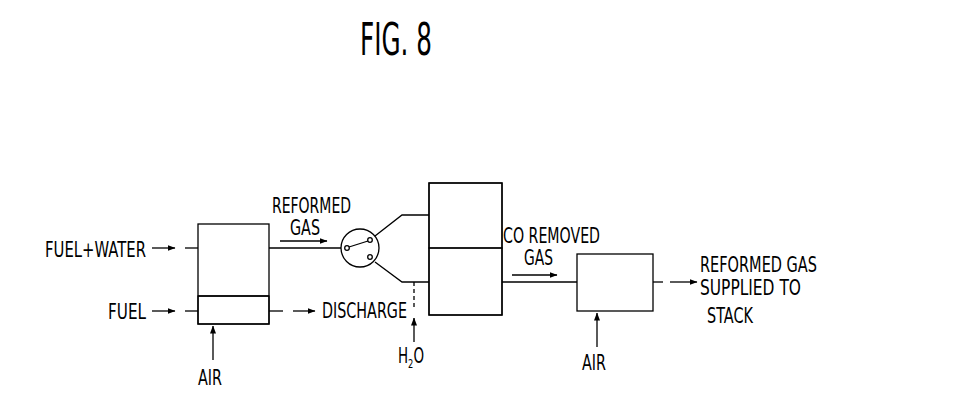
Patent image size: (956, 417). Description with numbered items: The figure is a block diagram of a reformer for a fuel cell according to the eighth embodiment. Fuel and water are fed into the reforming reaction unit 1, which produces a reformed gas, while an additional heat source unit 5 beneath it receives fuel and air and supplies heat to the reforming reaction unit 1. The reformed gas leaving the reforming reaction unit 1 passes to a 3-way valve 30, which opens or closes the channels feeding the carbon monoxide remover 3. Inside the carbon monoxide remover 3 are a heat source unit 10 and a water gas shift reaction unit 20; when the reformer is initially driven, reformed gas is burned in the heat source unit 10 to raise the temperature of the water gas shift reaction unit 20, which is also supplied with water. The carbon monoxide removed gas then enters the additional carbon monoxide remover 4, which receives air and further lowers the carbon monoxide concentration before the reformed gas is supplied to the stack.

The reforming reaction unit 1 is at (233, 224).
The additional heat source unit 5 is at (248, 324).
The 3-way valve 30 is at (357, 228).
The carbon monoxide remover 3 is at (493, 233).
The heat source unit 10 is at (471, 183).
The water gas shift reaction unit 20 is at (470, 315).
The additional carbon monoxide remover 4 is at (617, 254).